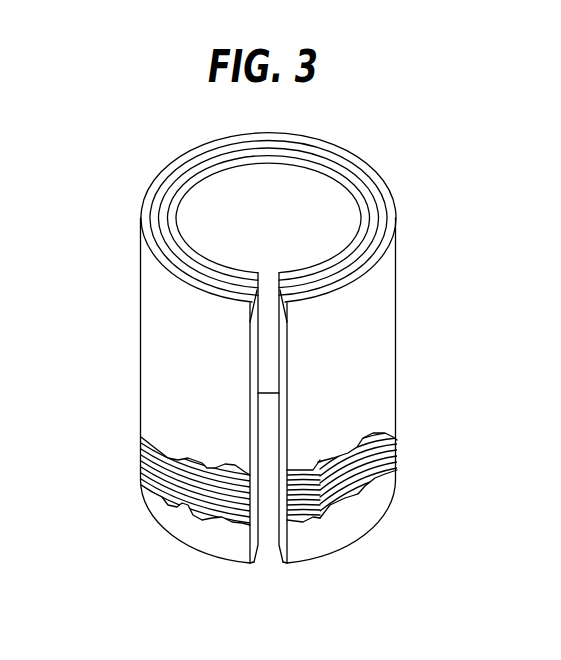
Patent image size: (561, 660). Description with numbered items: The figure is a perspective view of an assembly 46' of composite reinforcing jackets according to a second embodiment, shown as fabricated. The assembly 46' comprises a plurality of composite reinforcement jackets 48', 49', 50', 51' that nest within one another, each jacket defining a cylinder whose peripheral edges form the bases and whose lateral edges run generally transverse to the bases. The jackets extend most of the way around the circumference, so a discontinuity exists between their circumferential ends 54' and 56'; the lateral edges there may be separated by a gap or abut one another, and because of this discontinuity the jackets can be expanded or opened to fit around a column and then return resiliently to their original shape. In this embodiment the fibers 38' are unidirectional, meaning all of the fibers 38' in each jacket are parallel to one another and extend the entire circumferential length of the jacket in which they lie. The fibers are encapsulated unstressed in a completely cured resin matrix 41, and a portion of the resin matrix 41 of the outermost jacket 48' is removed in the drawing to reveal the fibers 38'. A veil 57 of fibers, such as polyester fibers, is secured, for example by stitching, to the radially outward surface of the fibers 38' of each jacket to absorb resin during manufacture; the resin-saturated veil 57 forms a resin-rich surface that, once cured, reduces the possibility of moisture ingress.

The assembly 46' is at (237, 217).
The composite reinforcement jacket 48' is at (232, 218).
The composite reinforcement jacket 49' is at (228, 218).
The composite reinforcement jacket 50' is at (223, 237).
The composite reinforcement jacket 51' is at (236, 349).
The circumferential end 56' is at (302, 418).
The fibers 38' is at (269, 452).
The resin matrix 41 is at (183, 508).
The circumferential end 54' is at (305, 573).
The veil 57 is at (322, 520).